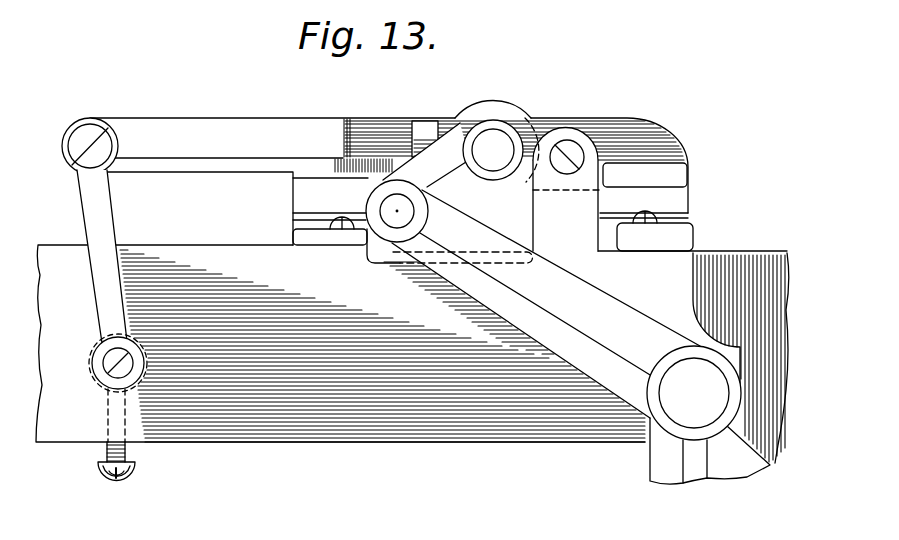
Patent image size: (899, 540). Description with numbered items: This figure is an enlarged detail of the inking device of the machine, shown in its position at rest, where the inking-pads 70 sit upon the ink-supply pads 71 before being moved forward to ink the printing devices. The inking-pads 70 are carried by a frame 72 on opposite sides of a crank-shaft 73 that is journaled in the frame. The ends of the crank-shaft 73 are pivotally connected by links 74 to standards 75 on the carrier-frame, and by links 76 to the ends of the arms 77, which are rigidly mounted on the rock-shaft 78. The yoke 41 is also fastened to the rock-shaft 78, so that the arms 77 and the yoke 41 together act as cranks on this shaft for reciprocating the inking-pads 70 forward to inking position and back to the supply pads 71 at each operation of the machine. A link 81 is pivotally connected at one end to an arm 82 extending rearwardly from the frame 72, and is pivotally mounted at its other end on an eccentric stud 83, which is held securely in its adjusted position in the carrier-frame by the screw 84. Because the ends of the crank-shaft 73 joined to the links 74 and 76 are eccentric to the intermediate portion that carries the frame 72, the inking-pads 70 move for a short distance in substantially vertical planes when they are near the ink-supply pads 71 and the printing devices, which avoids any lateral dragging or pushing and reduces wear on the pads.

The yoke 41 is at (745, 465).
The inking-pad 70 is at (490, 191).
The ink-supply pad 71 is at (293, 224).
The frame 72 is at (621, 120).
The crank-shaft 73 is at (493, 150).
The link 74 is at (542, 128).
The standard 75 is at (565, 189).
The link 76 is at (437, 182).
The arm 77 is at (621, 305).
The rock-shaft 78 is at (694, 393).
The link 81 is at (103, 220).
The arm 82 is at (373, 181).
The eccentric stud 83 is at (103, 360).
The screw 84 is at (103, 460).